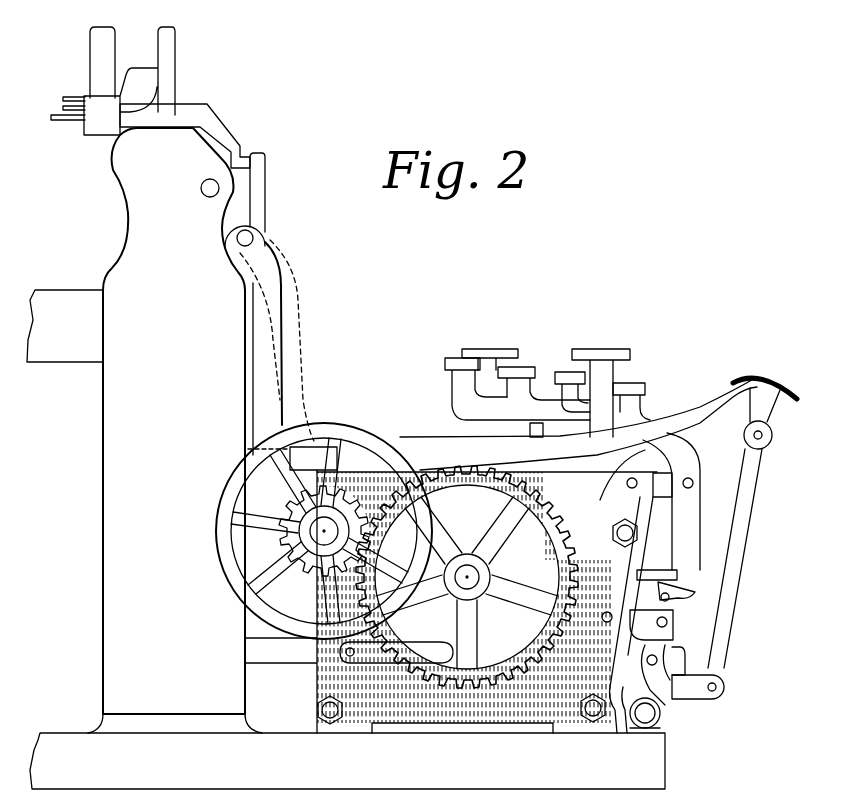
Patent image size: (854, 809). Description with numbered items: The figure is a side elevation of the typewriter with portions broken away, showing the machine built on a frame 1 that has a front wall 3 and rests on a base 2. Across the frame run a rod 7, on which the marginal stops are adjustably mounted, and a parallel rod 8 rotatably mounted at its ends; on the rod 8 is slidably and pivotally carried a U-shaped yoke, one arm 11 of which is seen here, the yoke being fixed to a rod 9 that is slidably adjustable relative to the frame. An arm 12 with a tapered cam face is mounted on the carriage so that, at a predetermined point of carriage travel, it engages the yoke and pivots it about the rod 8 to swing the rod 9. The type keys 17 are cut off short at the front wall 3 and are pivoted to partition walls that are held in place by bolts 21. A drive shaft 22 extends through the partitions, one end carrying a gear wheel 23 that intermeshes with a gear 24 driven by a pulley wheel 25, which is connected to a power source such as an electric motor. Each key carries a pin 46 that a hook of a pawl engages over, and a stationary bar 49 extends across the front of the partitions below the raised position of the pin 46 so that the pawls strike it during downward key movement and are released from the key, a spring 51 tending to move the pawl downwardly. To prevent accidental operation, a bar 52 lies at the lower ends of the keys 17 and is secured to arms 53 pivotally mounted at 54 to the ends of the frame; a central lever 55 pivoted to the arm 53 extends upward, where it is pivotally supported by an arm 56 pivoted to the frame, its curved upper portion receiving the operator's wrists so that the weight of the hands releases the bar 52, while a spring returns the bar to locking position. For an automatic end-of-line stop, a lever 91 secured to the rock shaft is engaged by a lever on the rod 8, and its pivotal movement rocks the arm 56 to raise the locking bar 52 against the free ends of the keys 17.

The frame 1 is at (103, 391).
The base 2 is at (652, 777).
The front wall 3 is at (245, 684).
The rod 7 is at (204, 194).
The rod 8 is at (238, 243).
The rod 9 is at (278, 322).
The arm 11 is at (260, 196).
The arm 12 is at (218, 130).
The type key 17 is at (632, 390).
The bolt 21 is at (580, 708).
The drive shaft 22 is at (479, 573).
The gear wheel 23 is at (546, 670).
The gear 24 is at (359, 508).
The pulley wheel 25 is at (356, 434).
The lever 91 is at (313, 455).
The pin 46 is at (680, 590).
The stationary bar 49 is at (632, 588).
The spring 51 is at (655, 726).
The bar 52 is at (670, 648).
The arm 53 is at (766, 368).
The pivot 54 is at (661, 704).
The central lever 55 is at (738, 560).
The arm 56 is at (686, 411).